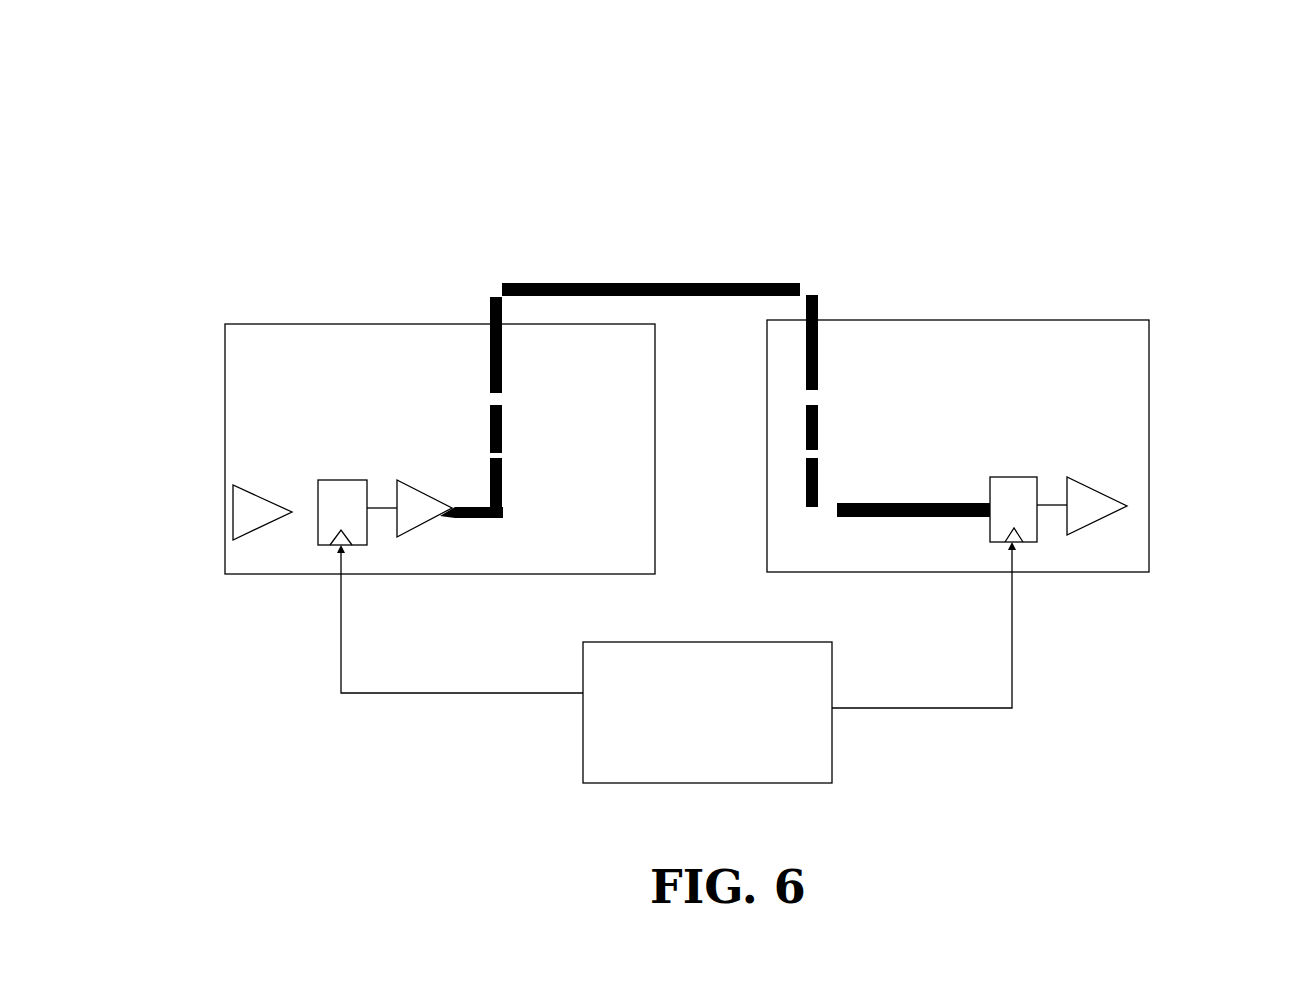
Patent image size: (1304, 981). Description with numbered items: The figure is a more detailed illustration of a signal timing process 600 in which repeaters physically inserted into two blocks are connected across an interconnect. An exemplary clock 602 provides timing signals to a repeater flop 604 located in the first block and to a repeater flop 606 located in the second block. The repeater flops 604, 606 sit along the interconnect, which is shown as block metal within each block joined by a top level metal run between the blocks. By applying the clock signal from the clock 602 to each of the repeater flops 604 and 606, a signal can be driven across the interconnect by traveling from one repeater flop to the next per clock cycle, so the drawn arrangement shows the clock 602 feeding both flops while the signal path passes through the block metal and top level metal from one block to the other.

The signal timing process 600 is at (1097, 97).
The clock 602 is at (538, 750).
The repeater flop 604 is at (317, 482).
The repeater flop 606 is at (1088, 485).